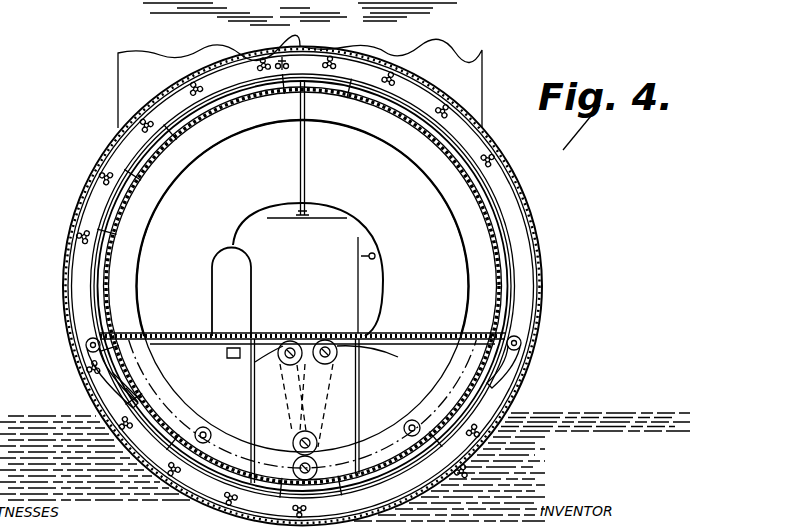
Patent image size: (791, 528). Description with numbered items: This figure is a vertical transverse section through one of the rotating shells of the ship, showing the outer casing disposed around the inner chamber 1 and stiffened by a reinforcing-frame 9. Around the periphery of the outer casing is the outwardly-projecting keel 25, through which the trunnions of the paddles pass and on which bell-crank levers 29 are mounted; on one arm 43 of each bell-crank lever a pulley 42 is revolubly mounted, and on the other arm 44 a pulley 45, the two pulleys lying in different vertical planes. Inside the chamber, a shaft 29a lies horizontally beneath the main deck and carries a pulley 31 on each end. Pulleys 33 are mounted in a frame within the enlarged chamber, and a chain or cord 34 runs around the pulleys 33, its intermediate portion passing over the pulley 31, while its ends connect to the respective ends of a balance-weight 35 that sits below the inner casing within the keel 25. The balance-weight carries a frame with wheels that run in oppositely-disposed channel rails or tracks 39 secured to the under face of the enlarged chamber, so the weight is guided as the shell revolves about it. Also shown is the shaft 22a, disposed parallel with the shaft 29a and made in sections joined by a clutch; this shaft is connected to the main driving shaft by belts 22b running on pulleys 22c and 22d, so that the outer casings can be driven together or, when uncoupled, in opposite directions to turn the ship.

The chamber 1 is at (378, 212).
The reinforcing-frame 9 is at (110, 258).
The shaft 22a is at (293, 349).
The belts 22b is at (291, 416).
The pulley 22c is at (275, 352).
The pulley 22d is at (294, 443).
The keel 25 is at (176, 92).
The bell-crank lever 29 is at (118, 378).
The shaft 29a is at (357, 354).
The pulley 31 is at (367, 335).
The pulleys 33 is at (312, 444).
The chain or cord 34 is at (226, 453).
The balance-weight 35 is at (303, 286).
The channel rails or tracks 39 is at (116, 375).
The pulley 42 is at (296, 63).
The arm 43 is at (300, 101).
The arm 44 is at (278, 63).
The pulley 45 is at (172, 399).